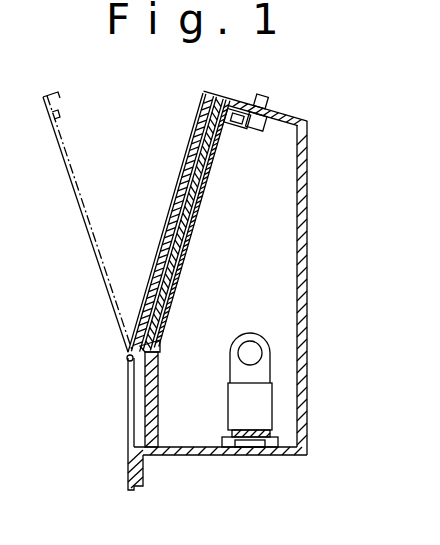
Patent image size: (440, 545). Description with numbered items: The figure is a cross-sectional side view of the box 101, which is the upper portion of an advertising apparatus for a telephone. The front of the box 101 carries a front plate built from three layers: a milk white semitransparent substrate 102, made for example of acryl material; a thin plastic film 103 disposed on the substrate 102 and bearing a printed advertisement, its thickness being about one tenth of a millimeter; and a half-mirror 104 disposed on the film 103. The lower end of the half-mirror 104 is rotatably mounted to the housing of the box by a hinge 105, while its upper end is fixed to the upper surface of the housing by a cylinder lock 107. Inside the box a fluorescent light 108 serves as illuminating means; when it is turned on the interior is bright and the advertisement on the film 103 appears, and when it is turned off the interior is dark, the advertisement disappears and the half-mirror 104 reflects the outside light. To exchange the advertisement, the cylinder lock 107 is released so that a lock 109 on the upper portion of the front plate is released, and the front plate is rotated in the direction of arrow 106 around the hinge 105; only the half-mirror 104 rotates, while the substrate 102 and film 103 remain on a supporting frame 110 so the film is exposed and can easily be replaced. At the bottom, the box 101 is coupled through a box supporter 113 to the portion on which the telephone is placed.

The box 101 is at (277, 280).
The semitransparent substrate 102 is at (201, 191).
The plastic film 103 is at (188, 205).
The half-mirror 104 is at (170, 229).
The hinge 105 is at (126, 361).
The arrow 106 is at (163, 80).
The cylinder lock 107 is at (263, 130).
The fluorescent light 108 is at (240, 350).
The lock 109 is at (250, 128).
The supporting frame 110 is at (160, 348).
The box supporter 113 is at (137, 472).